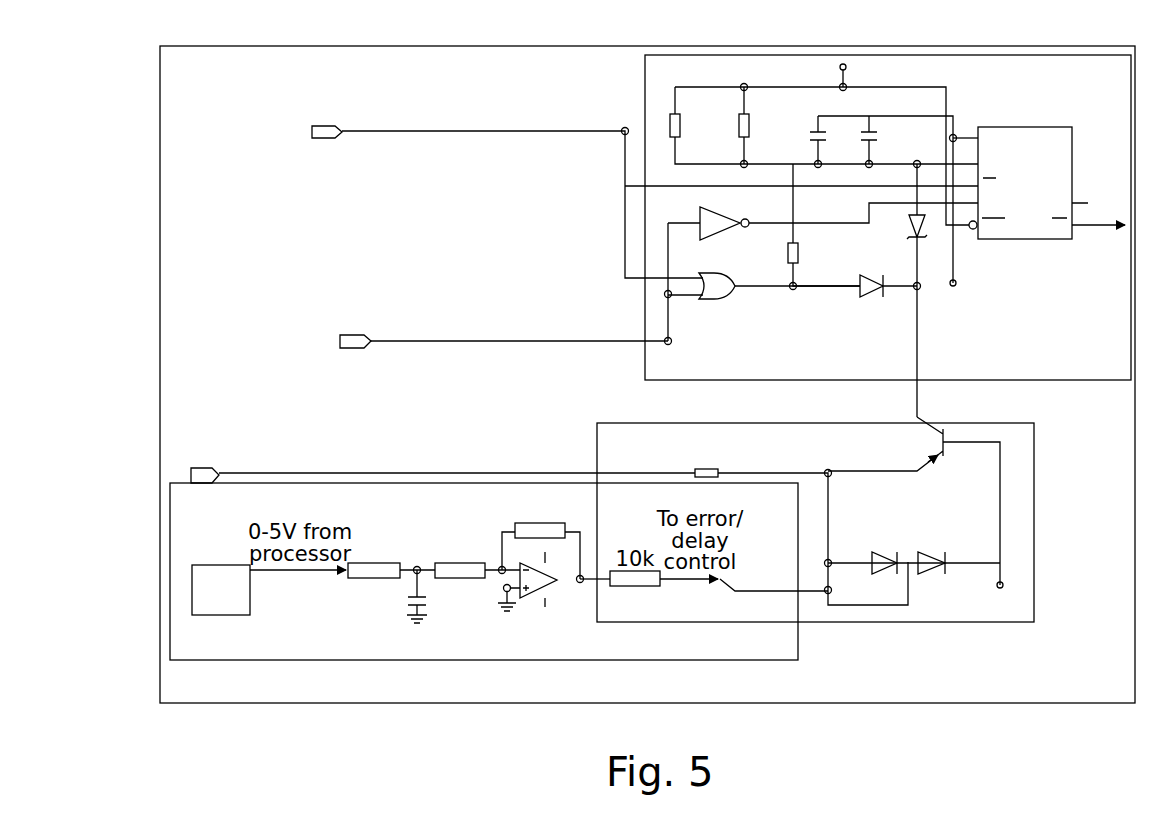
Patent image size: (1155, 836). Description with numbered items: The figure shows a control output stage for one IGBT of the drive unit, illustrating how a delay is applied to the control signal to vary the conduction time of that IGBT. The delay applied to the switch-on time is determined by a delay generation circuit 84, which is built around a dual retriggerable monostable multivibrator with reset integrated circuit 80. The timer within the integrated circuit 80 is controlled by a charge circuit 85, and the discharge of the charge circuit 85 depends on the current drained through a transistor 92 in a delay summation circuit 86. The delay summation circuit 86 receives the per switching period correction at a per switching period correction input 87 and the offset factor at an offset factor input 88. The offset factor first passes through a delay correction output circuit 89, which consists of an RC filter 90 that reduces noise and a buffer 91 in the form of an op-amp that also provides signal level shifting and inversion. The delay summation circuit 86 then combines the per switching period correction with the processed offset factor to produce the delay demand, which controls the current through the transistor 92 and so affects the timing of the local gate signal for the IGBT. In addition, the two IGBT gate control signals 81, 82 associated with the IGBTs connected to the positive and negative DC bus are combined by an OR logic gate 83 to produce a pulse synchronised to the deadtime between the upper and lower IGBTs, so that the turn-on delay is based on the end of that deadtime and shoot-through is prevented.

The integrated circuit 80 is at (1063, 159).
The IGBT gate control signal 81 is at (327, 140).
The IGBT gate control signal 82 is at (358, 332).
The OR logic gate 83 is at (722, 299).
The delay generation circuit 84 is at (933, 55).
The charge circuit 85 is at (786, 72).
The delay summation circuit 86 is at (1034, 548).
The per switching period correction input 87 is at (205, 468).
The offset factor input 88 is at (208, 563).
The delay correction output circuit 89 is at (800, 655).
The RC filter 90 is at (345, 642).
The buffer 91 is at (587, 642).
The transistor 92 is at (945, 430).